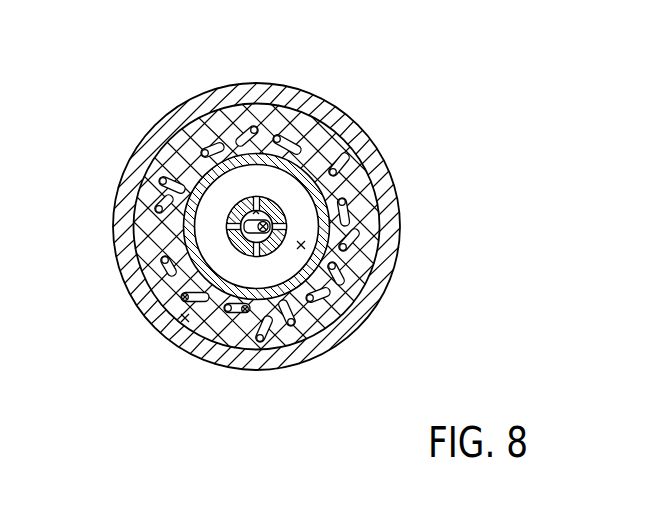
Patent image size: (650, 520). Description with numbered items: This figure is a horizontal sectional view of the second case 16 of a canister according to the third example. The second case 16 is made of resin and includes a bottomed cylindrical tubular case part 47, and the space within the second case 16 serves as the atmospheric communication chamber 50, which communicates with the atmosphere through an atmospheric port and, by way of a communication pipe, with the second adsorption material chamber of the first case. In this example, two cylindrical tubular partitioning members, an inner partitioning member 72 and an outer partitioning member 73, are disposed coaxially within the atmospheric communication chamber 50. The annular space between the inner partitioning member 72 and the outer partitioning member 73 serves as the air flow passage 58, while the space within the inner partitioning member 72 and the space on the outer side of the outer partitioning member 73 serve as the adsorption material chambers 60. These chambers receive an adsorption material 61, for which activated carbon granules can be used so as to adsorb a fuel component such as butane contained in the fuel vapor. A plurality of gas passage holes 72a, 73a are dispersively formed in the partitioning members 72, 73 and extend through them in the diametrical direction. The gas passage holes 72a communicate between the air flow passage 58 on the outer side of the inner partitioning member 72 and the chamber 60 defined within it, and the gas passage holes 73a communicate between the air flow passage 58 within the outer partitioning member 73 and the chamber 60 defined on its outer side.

The second case 16 is at (155, 100).
The case part 47 is at (255, 80).
The atmospheric communication chamber 50 is at (334, 313).
The air flow passage 58 is at (375, 284).
The adsorption material chamber 60 is at (255, 197).
The adsorption material 61 is at (281, 218).
The inner partitioning member 72 is at (224, 205).
The gas passage holes 72a is at (255, 257).
The outer partitioning member 73 is at (305, 153).
The gas passage holes 73a is at (285, 330).